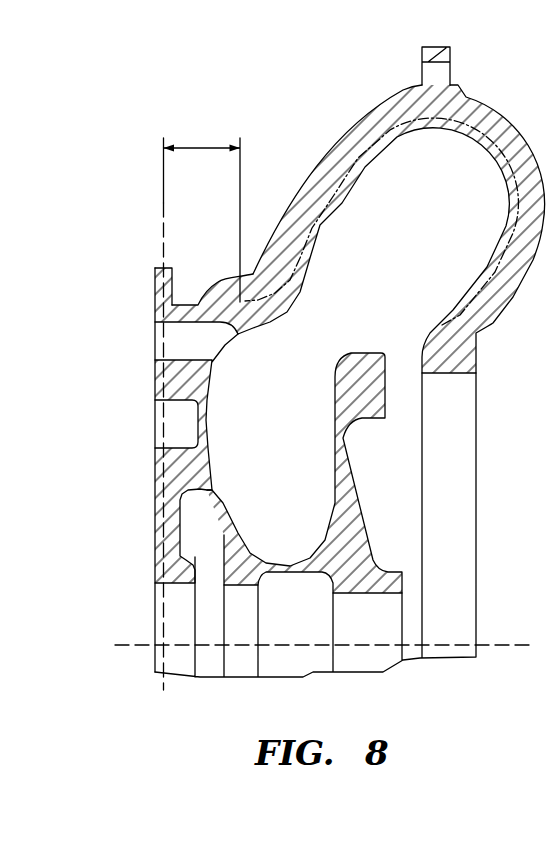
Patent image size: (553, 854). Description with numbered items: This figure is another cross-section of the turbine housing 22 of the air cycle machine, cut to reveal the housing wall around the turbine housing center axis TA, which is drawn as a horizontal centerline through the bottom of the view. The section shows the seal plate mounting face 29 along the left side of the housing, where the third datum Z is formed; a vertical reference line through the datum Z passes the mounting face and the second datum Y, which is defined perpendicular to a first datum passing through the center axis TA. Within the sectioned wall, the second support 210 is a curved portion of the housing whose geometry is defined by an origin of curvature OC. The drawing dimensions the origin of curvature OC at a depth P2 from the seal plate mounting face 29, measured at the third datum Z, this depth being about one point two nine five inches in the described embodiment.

The turbine housing 22 is at (301, 418).
The seal plate mounting face 29 is at (156, 524).
The second support 210 is at (216, 280).
The origin of curvature OC is at (245, 301).
The turbine housing center axis TA is at (505, 645).
The third datum Z is at (162, 246).
The second datum Y is at (125, 652).
The depth P2 is at (202, 211).